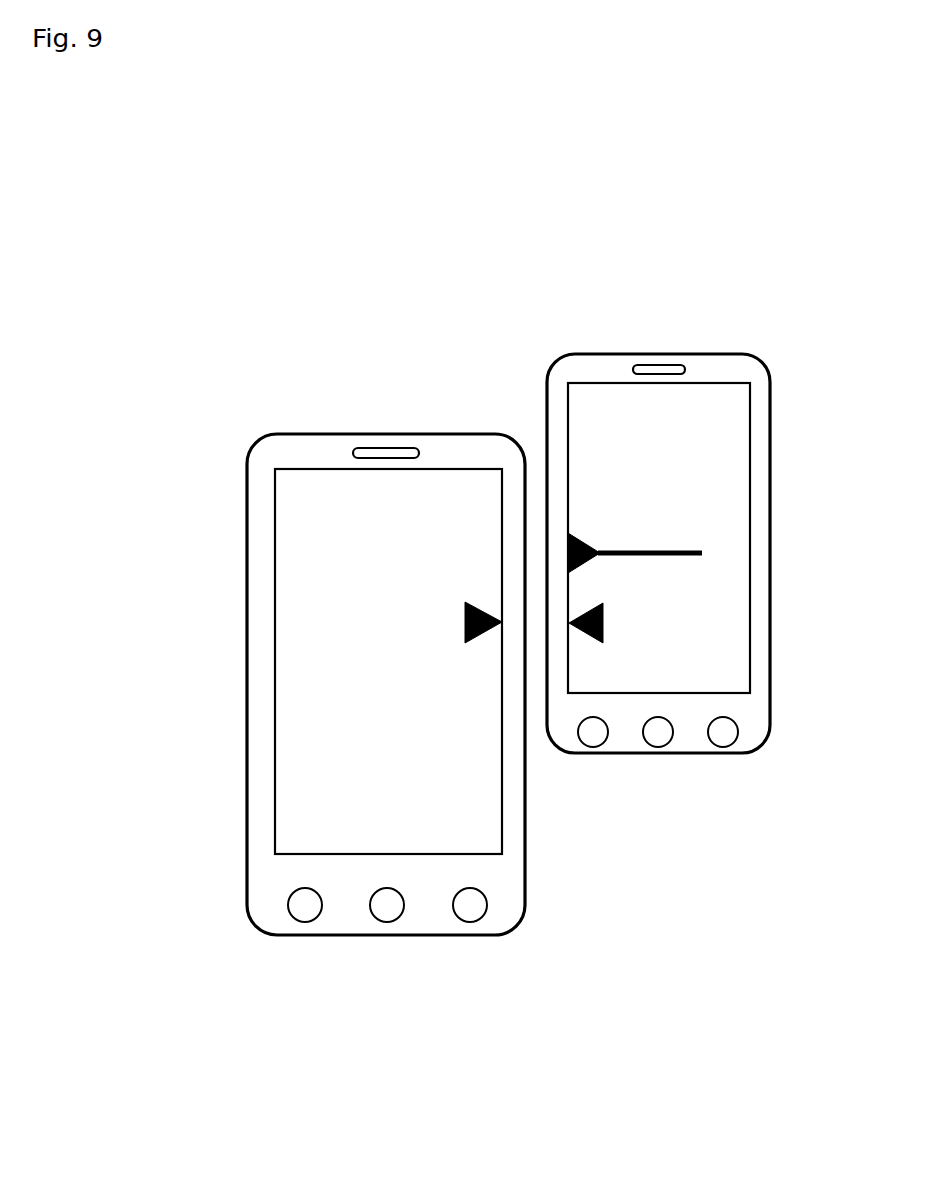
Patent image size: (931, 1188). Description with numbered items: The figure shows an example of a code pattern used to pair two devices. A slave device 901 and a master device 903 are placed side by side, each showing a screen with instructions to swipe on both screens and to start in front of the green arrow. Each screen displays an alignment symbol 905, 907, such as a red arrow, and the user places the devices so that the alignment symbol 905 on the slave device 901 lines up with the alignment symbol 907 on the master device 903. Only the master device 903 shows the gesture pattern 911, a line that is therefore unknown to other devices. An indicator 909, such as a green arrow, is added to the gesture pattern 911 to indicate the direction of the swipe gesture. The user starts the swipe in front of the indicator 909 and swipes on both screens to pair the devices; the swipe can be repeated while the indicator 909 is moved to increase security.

The slave device 901 is at (432, 935).
The master device 903 is at (702, 753).
The alignment symbol 905 is at (483, 633).
The alignment symbol 907 is at (592, 637).
The indicator 909 is at (585, 537).
The gesture pattern 911 is at (668, 552).